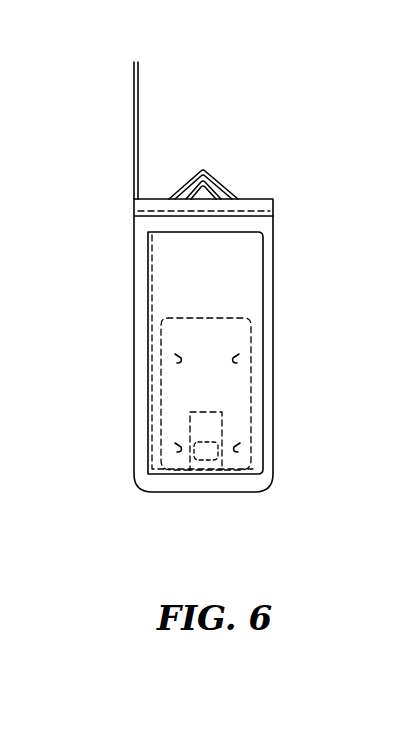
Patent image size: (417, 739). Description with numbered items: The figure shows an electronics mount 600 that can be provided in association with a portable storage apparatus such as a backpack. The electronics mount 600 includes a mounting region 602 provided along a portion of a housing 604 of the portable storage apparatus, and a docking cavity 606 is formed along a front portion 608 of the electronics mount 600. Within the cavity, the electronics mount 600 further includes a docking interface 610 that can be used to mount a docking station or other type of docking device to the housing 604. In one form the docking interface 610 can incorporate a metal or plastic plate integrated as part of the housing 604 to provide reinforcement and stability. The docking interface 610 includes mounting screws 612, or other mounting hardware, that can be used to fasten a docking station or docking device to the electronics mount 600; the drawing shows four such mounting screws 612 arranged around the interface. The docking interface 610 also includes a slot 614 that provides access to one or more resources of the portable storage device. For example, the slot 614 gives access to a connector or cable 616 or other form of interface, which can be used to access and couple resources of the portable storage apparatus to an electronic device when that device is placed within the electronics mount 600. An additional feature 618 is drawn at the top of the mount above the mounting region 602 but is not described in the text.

The electronics mount 600 is at (301, 91).
The mounting region 602 is at (134, 232).
The housing 604 is at (132, 137).
The docking cavity 606 is at (187, 282).
The front portion 608 is at (257, 223).
The docking interface 610 is at (170, 330).
The mounting screws 612 is at (175, 359).
The slot 614 is at (213, 422).
The connector or cable 616 is at (206, 453).
The belt clip 618 is at (213, 172).